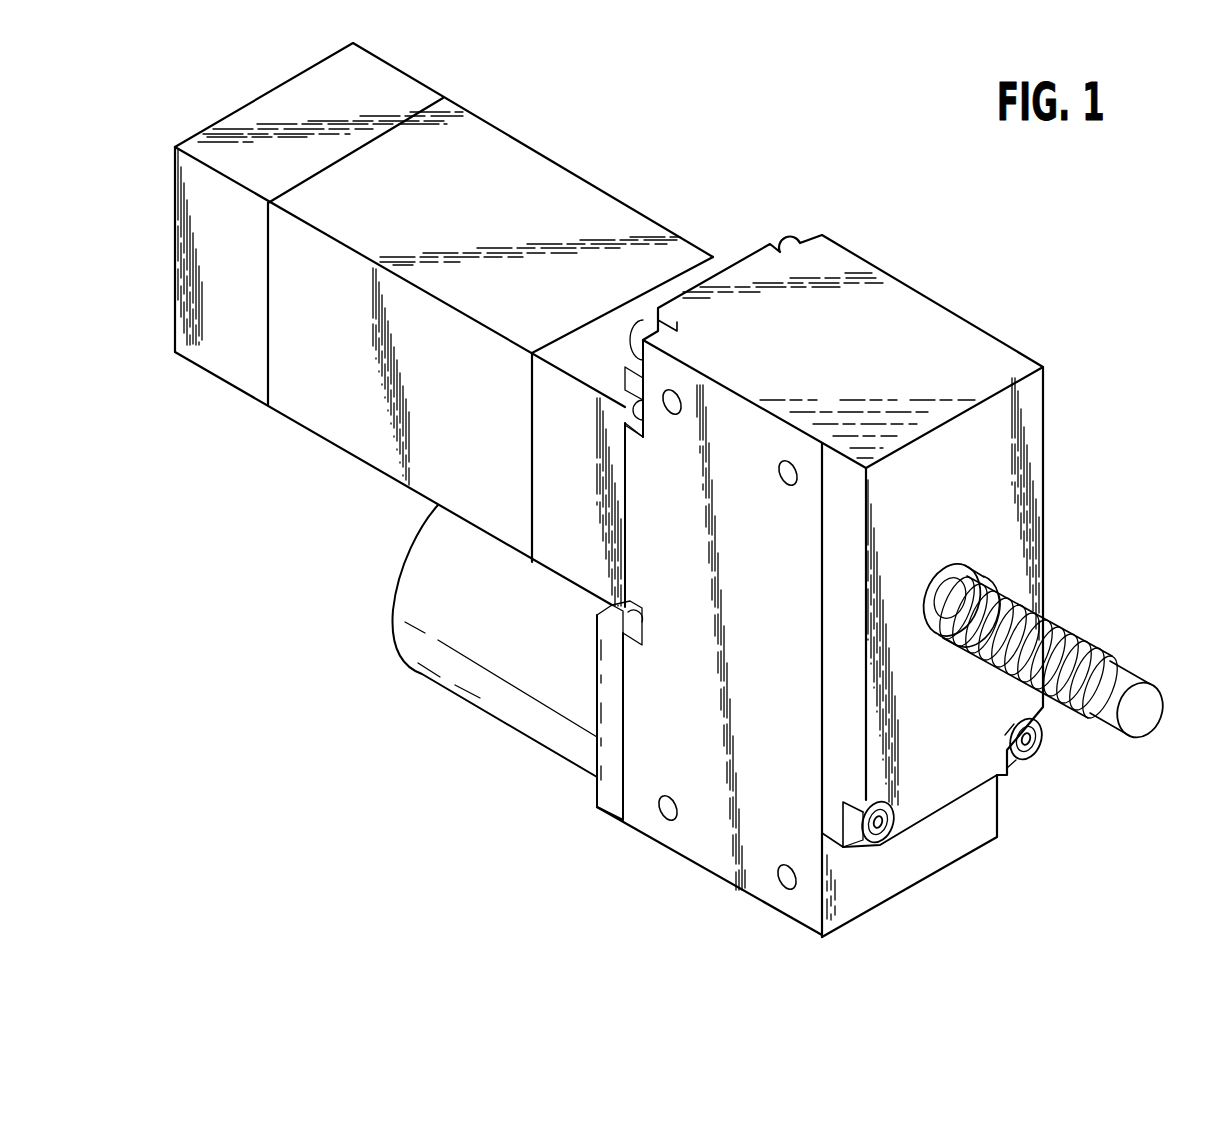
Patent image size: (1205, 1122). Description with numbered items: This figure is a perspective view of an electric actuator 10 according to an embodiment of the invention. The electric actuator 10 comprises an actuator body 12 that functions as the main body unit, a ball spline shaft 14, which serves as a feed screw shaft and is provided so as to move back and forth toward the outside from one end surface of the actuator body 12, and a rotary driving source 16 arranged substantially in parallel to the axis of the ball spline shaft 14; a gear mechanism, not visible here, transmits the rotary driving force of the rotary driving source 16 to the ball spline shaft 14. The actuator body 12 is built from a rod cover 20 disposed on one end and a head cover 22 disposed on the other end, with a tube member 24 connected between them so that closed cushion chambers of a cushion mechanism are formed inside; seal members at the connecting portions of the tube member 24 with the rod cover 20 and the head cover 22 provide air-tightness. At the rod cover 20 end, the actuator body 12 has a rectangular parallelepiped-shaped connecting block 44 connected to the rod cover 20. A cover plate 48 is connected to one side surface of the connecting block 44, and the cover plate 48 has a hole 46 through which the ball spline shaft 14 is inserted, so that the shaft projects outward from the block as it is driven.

The electric actuator 10 is at (720, 124).
The actuator body 12 is at (338, 414).
The ball spline shaft 14 is at (1077, 628).
The rotary driving source 16 is at (512, 707).
The rod cover 20 is at (575, 565).
The head cover 22 is at (225, 365).
The tube member 24 is at (432, 467).
The connecting block 44 is at (688, 860).
The hole 46 is at (950, 585).
The cover plate 48 is at (1013, 468).